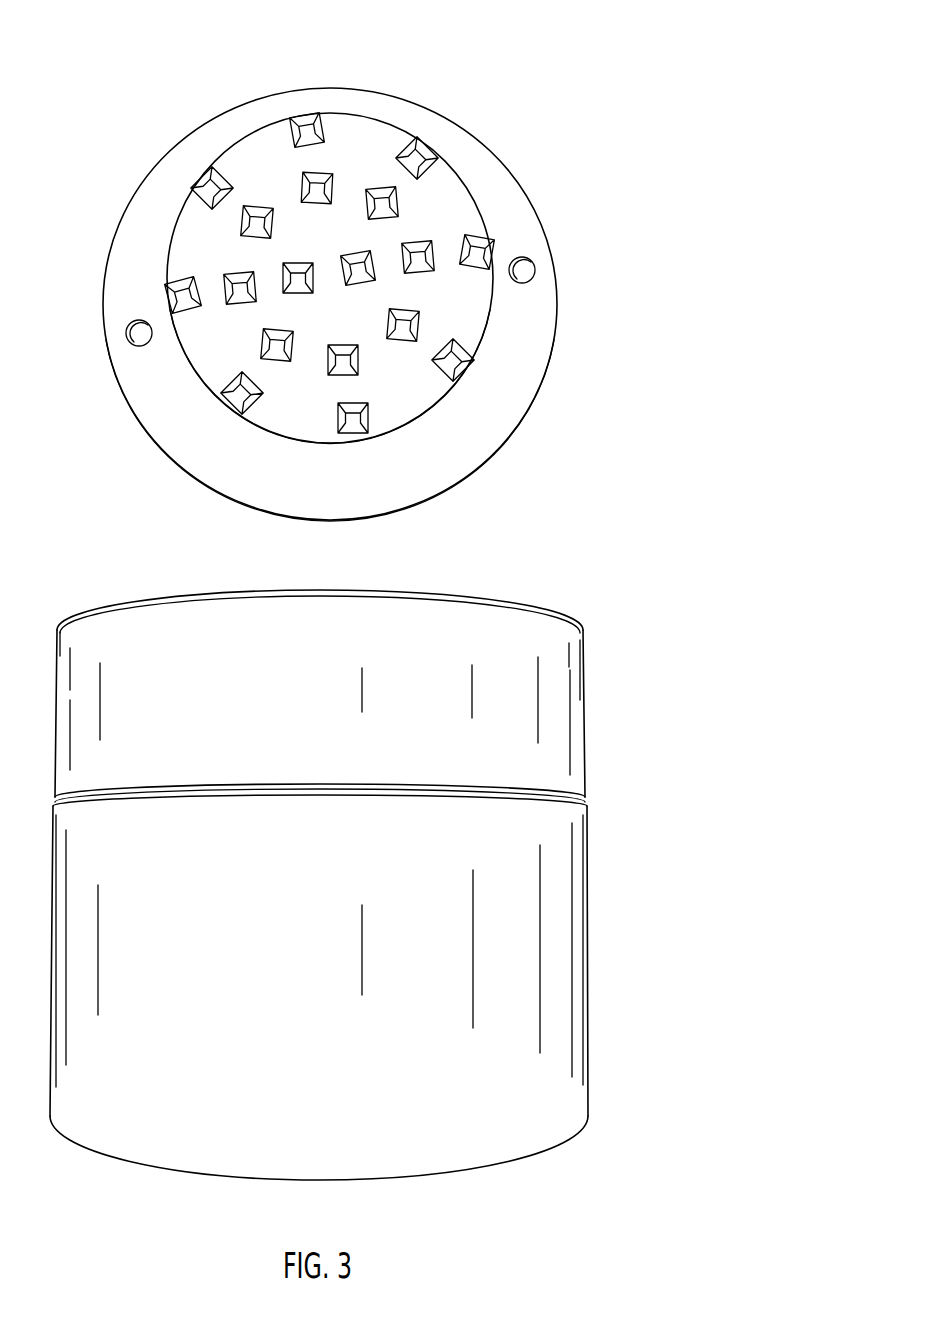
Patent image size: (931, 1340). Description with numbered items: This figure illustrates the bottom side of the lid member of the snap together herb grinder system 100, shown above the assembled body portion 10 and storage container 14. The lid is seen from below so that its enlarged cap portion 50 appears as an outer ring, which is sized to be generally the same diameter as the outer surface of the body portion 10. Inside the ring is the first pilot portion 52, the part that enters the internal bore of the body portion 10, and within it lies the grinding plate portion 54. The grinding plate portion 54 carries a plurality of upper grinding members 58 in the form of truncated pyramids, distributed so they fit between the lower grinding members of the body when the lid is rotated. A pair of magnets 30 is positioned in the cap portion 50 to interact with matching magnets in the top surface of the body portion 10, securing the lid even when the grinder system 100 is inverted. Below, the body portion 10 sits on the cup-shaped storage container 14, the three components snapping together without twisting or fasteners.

The snap together herb grinder system 100 is at (115, 77).
The body portion 10 is at (576, 708).
The storage container 14 is at (575, 940).
The magnets 30 is at (523, 270).
The enlarged cap portion 50 is at (518, 178).
The first pilot portion 52 is at (437, 412).
The grinding plate portion 54 is at (185, 240).
The upper grinding members 58 is at (202, 185).